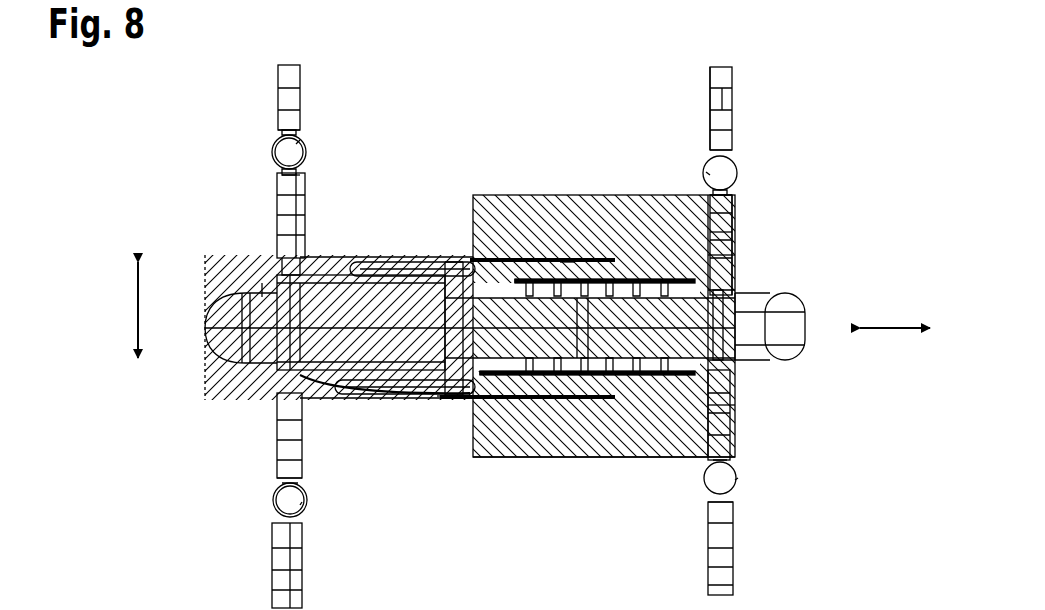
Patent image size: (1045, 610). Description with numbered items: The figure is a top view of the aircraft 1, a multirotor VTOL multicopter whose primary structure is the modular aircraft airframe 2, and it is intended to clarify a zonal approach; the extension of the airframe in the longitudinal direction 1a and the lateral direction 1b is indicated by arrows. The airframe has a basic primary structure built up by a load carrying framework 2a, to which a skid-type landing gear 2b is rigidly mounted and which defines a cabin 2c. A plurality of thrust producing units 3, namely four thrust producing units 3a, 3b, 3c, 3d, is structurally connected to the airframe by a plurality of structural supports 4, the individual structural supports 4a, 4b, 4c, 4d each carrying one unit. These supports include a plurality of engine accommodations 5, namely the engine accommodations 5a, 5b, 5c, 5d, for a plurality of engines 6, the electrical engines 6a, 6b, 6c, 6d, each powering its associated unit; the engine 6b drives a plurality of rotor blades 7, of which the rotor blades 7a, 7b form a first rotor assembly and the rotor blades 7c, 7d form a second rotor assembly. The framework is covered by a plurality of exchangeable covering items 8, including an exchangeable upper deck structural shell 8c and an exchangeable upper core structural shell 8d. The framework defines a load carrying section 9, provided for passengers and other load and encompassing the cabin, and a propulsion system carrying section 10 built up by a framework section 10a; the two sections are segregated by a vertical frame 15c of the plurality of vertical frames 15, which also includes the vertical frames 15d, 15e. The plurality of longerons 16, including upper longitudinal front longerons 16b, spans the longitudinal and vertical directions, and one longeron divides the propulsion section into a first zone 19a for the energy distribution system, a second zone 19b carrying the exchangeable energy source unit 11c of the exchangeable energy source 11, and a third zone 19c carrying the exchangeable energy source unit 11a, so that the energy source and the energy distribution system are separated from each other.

The aircraft 1 is at (168, 178).
The longitudinal direction 1a is at (892, 328).
The lateral direction 1b is at (133, 315).
The aircraft airframe 2 is at (220, 342).
The load carrying framework 2a is at (445, 396).
The landing gear 2b is at (510, 400).
The cabin 2c is at (262, 290).
The plurality of thrust producing units 3 is at (262, 140).
The thrust producing unit 3a is at (262, 152).
The thrust producing unit 3b is at (740, 145).
The thrust producing unit 3c is at (265, 488).
The thrust producing unit 3d is at (742, 490).
The plurality of structural supports 4 is at (272, 272).
The structural support 4a is at (302, 175).
The structural support 4b is at (735, 192).
The structural support 4c is at (302, 490).
The structural support 4d is at (735, 470).
The plurality of engine accommodations 5 is at (310, 148).
The engine accommodation 5a is at (302, 160).
The engine accommodation 5b is at (735, 170).
The engine accommodation 5c is at (305, 512).
The engine accommodation 5d is at (737, 500).
The plurality of engines 6 is at (710, 170).
The engine 6a is at (300, 140).
The engine 6b is at (706, 172).
The engine 6c is at (302, 502).
The engine 6d is at (738, 478).
The plurality of rotor blades 7 is at (742, 72).
The rotor blade 7a is at (722, 100).
The rotor blade 7b is at (720, 232).
The rotor blade 7c is at (710, 80).
The rotor blade 7d is at (728, 225).
The plurality of exchangeable covering items 8 is at (378, 300).
The exchangeable upper deck structural shell 8c is at (317, 319).
The exchangeable upper core structural shell 8d is at (567, 278).
The load carrying section 9 is at (330, 400).
The propulsion system carrying section 10 is at (655, 192).
The framework section 10a is at (665, 457).
The exchangeable energy source 11 is at (623, 263).
The exchangeable energy source unit 11a is at (580, 378).
The exchangeable energy source unit 11c is at (518, 282).
The plurality of vertical frames 15 is at (482, 368).
The vertical frame 15c is at (457, 258).
The vertical frame 15d is at (600, 298).
The vertical frame 15e is at (742, 295).
The plurality of longerons 16 is at (540, 300).
The upper longitudinal front longeron 16b is at (408, 262).
The first zone 19a is at (742, 330).
The second zone 19b is at (748, 256).
The third zone 19c is at (742, 405).